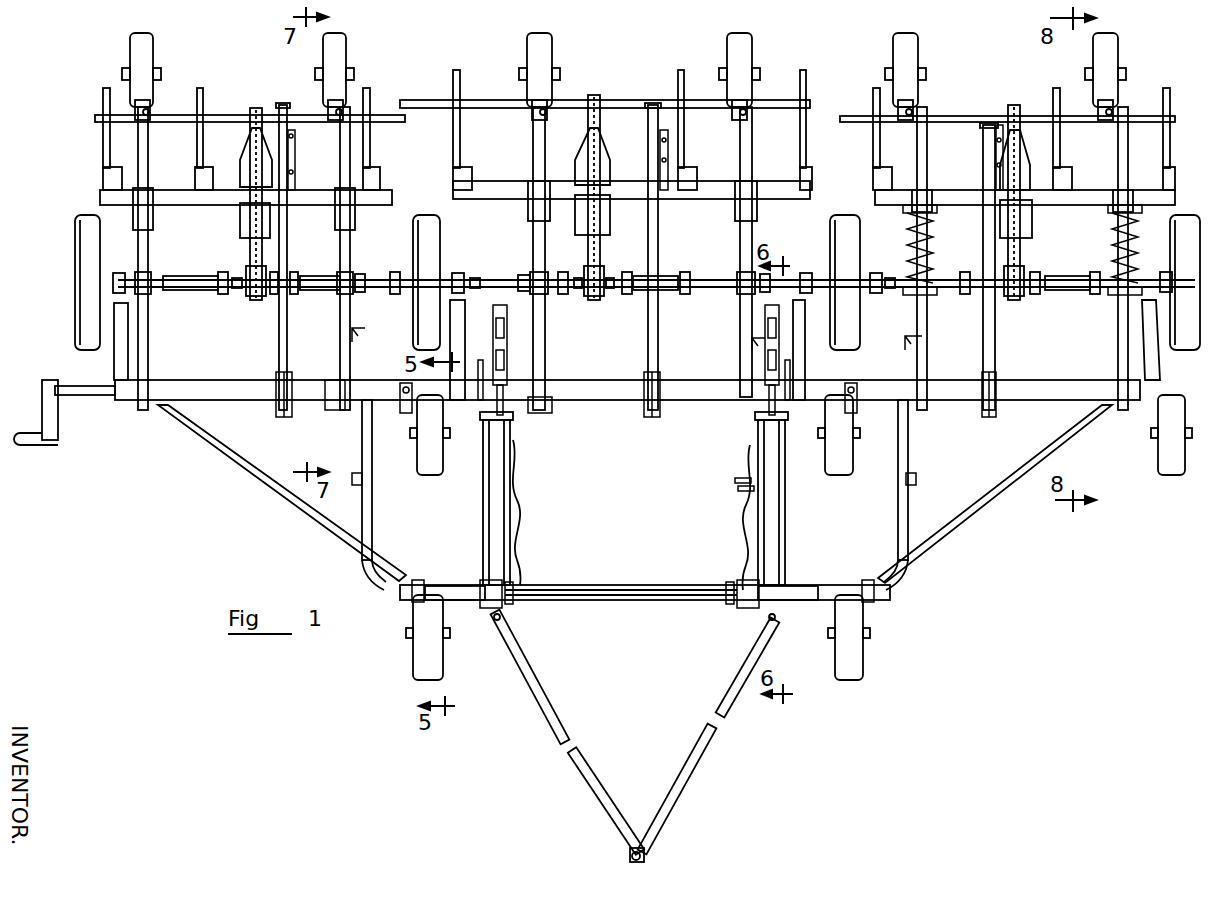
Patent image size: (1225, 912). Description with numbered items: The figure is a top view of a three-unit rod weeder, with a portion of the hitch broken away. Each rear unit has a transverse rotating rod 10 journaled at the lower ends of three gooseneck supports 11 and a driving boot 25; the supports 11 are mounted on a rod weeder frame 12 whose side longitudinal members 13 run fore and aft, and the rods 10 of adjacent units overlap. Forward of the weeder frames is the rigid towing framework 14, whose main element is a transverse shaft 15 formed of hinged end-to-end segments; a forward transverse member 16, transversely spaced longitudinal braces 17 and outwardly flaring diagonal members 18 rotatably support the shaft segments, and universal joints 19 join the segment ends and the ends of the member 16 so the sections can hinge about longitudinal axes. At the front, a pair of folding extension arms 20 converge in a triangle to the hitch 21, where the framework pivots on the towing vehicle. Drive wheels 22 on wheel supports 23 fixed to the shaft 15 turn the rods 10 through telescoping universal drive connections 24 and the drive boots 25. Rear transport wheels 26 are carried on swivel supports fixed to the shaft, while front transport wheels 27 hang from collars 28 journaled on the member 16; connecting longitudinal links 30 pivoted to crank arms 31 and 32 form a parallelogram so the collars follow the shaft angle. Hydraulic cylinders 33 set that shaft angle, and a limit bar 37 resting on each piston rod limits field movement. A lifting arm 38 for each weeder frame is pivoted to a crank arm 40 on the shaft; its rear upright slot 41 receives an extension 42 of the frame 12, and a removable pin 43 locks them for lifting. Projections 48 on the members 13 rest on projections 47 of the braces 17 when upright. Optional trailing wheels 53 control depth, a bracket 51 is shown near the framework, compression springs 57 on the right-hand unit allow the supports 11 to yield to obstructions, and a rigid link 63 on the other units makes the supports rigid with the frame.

The transverse rotating rod 10 is at (97, 118).
The gooseneck support 11 is at (371, 140).
The rod weeder frame 12 is at (152, 314).
The longitudinal member 13 is at (148, 352).
The towing framework 14 is at (272, 504).
The transverse shaft 15 is at (613, 394).
The forward transverse member 16 is at (535, 602).
The longitudinal brace 17 is at (372, 506).
The diagonal member 18 is at (262, 450).
The universal joint 19 is at (401, 400).
The folding extension arm 20 is at (556, 704).
The hitch 21 is at (646, 858).
The drive wheel 22 is at (78, 278).
The wheel support 23 is at (113, 354).
The universal drive connection 24 is at (184, 276).
The drive boot 25 is at (246, 257).
The rear transport wheel 26 is at (430, 476).
The front transport wheel 27 is at (436, 655).
The collar 28 is at (456, 585).
The connecting longitudinal link 30 is at (483, 516).
The crank arm 31 is at (480, 362).
The crank arm 32 is at (480, 603).
The hydraulic cylinder 33 is at (516, 506).
The limit bar 37 is at (505, 346).
The lifting arm 38 is at (288, 246).
The crank arm 40 is at (276, 410).
The upright slot 41 is at (292, 172).
The extension 42 is at (291, 160).
The removable pin 43 is at (288, 130).
The projection 47 is at (355, 472).
The outward projection 48 is at (360, 338).
The bracket 51 is at (334, 410).
The trailing wheel 53 is at (150, 47).
The compression spring 57 is at (906, 258).
The rigid link 63 is at (148, 240).